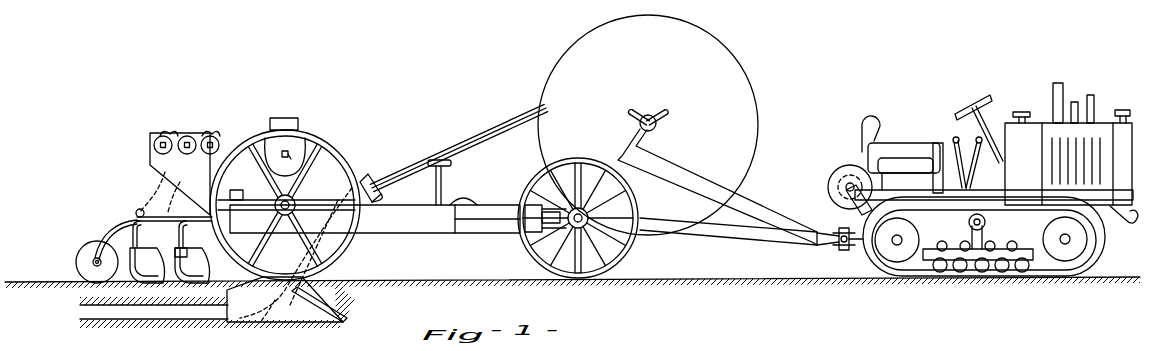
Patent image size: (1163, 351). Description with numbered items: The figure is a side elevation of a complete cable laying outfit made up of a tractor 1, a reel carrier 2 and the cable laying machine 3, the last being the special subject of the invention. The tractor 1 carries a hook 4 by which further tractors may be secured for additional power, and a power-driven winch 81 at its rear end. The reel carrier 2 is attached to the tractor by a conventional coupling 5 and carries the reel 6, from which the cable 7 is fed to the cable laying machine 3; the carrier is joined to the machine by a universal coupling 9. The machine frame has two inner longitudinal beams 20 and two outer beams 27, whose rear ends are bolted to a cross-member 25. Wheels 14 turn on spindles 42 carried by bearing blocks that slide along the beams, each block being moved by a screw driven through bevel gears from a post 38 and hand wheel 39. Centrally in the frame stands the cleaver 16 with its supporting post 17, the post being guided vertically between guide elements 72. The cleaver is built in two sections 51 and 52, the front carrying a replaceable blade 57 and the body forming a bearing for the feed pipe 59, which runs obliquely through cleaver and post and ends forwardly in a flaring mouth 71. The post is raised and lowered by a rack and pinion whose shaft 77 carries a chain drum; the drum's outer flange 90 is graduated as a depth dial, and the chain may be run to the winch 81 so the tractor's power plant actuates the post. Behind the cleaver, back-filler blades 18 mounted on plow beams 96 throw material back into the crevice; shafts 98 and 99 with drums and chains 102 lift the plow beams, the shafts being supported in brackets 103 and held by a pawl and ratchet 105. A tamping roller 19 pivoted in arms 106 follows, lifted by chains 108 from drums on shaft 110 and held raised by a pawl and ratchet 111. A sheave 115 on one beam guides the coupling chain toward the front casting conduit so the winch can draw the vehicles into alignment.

The tractor 1 is at (947, 93).
The reel carrier 2 is at (784, 99).
The cable laying machine 3 is at (338, 123).
The hook 4 is at (1130, 224).
The coupling 5 is at (838, 249).
The reel 6 is at (737, 52).
The cable 7 is at (484, 138).
The universal coupling 9 is at (562, 240).
The wheels 14 is at (339, 157).
The cleaver 16 is at (350, 301).
The supporting post 17 is at (291, 118).
The back-filler blades 18 is at (134, 266).
The roller 19 is at (77, 261).
The longitudinal beams 20 is at (490, 230).
The cross-member 25 is at (240, 190).
The outer beams 27 is at (423, 230).
The post 38 is at (443, 180).
The hand wheel 39 is at (452, 164).
The outer axle section 42 is at (278, 210).
The cleaver section 51 is at (258, 322).
The cleaver section 52 is at (320, 279).
The blade 57 is at (341, 322).
The feed pipe 59 is at (289, 323).
The flaring mouth 71 is at (383, 199).
The guide element 72 is at (328, 182).
The shaft 77 is at (287, 162).
The winch 81 is at (840, 175).
The outer flange 90 is at (271, 142).
The plow beams 96 is at (178, 238).
The shaft 98 is at (184, 152).
The shaft 99 is at (207, 152).
The chains 102 is at (185, 198).
The brackets 103 is at (150, 160).
The pawl and ratchet arrangement 105 is at (211, 134).
The arms 106 is at (118, 233).
The chains 108 is at (160, 186).
The shaft 110 is at (154, 146).
The pawl and ratchet arrangement 111 is at (166, 134).
The sheave 115 is at (470, 200).